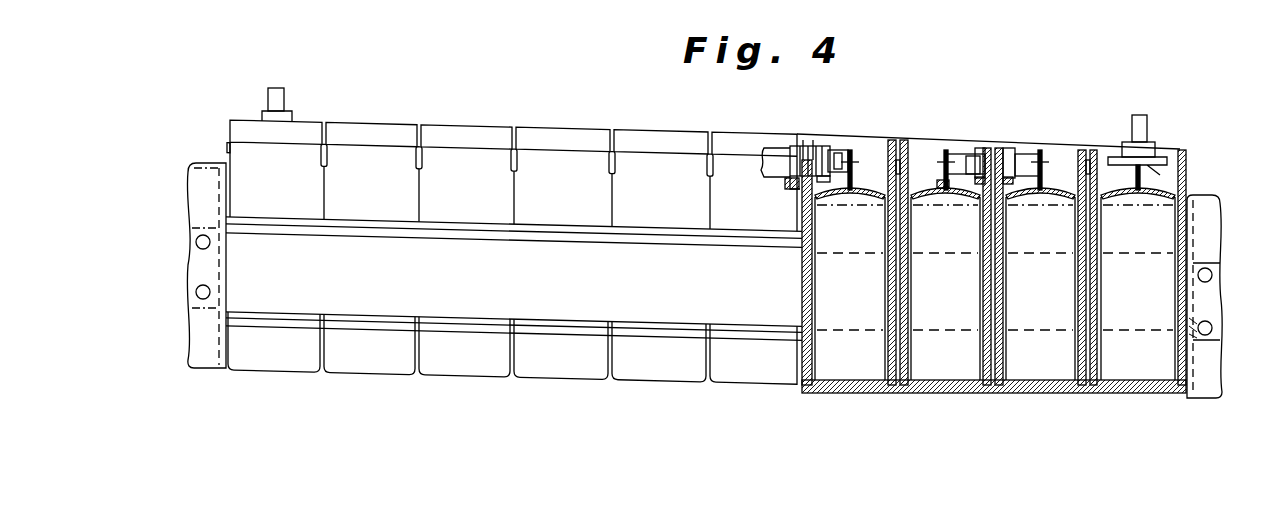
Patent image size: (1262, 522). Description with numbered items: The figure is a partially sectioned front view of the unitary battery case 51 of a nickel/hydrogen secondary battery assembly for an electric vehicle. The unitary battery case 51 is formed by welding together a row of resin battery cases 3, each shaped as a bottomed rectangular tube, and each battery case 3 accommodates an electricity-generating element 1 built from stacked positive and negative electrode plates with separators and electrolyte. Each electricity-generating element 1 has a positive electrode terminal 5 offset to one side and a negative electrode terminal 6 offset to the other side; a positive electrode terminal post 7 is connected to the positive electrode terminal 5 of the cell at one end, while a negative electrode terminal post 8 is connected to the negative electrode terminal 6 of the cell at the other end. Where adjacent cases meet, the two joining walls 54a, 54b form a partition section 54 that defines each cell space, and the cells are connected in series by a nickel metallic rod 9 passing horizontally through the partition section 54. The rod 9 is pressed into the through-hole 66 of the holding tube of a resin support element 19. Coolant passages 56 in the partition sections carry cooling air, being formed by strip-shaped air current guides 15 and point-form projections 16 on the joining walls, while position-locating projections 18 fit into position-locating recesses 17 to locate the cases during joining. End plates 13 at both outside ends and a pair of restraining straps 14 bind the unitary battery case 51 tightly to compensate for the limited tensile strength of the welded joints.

The electricity-generating element 1 is at (845, 357).
The battery case 3 is at (272, 353).
The positive electrode terminal 5 is at (1040, 172).
The negative electrode terminal 6 is at (940, 170).
The positive electrode terminal post 7 is at (266, 95).
The negative electrode terminal post 8 is at (1148, 123).
The electrical connection element 9 is at (841, 149).
The end plate 13 is at (196, 206).
The restraining strap 14 is at (570, 303).
The air current guide 15 is at (894, 380).
The point-form projection 16 is at (1082, 150).
The position-locating recess 17 is at (1040, 267).
The position-locating projection 18 is at (1138, 267).
The support element 19 is at (832, 149).
The unitary battery case 51 is at (651, 386).
The partition section 54 is at (877, 293).
The joining wall 54a is at (972, 240).
The joining wall 54b is at (1000, 296).
The coolant passage 56 is at (520, 118).
The through-hole 66 is at (790, 180).